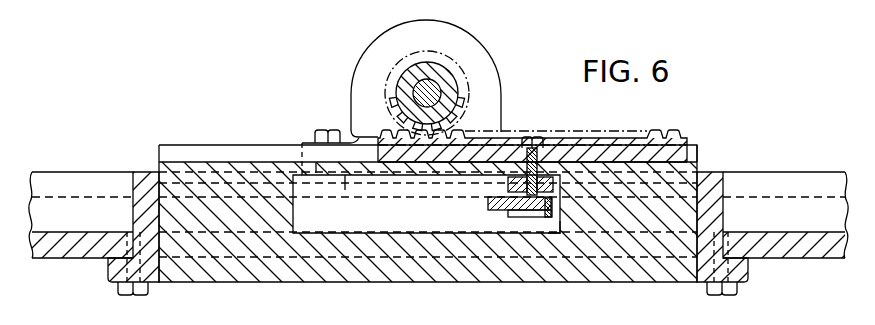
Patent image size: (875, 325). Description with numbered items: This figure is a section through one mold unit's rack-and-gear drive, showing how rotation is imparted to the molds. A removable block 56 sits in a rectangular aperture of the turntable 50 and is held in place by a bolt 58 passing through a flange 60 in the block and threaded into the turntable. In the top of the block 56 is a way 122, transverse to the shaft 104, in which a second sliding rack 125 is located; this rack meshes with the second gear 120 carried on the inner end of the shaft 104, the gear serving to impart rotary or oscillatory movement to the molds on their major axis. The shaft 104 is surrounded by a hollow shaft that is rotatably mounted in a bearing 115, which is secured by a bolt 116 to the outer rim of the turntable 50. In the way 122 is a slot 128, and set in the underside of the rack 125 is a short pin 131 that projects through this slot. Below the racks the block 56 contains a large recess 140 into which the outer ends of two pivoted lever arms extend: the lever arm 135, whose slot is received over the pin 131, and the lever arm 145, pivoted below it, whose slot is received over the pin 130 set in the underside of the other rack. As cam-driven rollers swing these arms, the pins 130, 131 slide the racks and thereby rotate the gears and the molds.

The turntable 50 is at (813, 250).
The removable block 56 is at (629, 272).
The bolt 58 is at (135, 288).
The flange 60 is at (113, 263).
The shaft 104 is at (438, 92).
The bearing 115 is at (363, 80).
The bolt 116 is at (325, 128).
The second gear 120 is at (442, 75).
The way 122 is at (205, 152).
The second sliding rack 125 is at (685, 140).
The slot 128 is at (343, 167).
The pin 130 is at (543, 211).
The pin 131 is at (525, 168).
The lever arm 135 is at (553, 170).
The recess 140 is at (395, 215).
The lever arm 145 is at (560, 235).